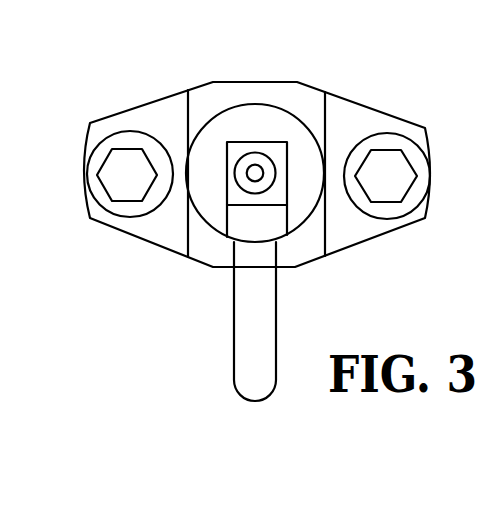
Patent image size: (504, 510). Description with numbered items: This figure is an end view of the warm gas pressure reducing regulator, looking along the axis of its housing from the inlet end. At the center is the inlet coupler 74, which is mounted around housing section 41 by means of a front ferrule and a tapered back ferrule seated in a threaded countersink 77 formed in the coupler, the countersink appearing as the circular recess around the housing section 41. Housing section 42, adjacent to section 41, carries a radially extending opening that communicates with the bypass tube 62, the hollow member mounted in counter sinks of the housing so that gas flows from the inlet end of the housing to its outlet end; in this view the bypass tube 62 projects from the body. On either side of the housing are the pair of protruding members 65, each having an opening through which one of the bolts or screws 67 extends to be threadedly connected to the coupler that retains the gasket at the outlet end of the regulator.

The housing section 41 is at (245, 148).
The housing section 42 is at (240, 222).
The bypass tube 62 is at (232, 358).
The protruding members 65 is at (350, 122).
The bolts or screws 67 is at (393, 173).
The inlet coupler 74 is at (302, 100).
The threaded countersink 77 is at (207, 207).